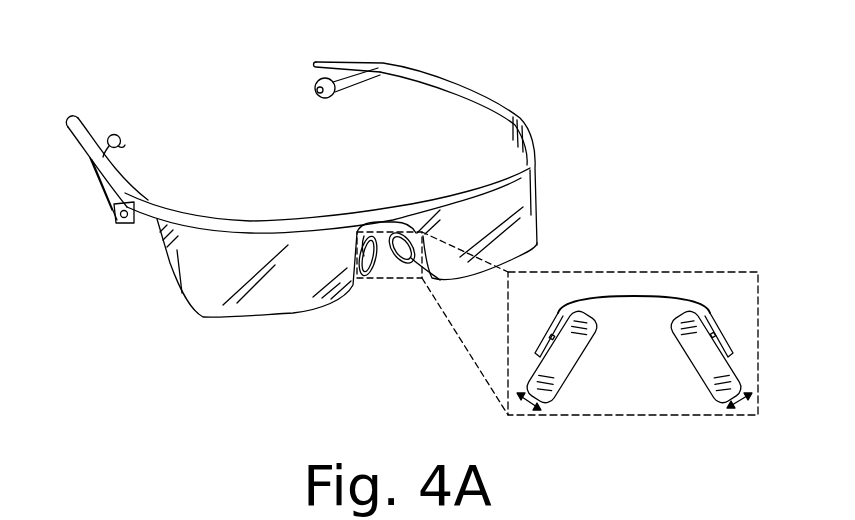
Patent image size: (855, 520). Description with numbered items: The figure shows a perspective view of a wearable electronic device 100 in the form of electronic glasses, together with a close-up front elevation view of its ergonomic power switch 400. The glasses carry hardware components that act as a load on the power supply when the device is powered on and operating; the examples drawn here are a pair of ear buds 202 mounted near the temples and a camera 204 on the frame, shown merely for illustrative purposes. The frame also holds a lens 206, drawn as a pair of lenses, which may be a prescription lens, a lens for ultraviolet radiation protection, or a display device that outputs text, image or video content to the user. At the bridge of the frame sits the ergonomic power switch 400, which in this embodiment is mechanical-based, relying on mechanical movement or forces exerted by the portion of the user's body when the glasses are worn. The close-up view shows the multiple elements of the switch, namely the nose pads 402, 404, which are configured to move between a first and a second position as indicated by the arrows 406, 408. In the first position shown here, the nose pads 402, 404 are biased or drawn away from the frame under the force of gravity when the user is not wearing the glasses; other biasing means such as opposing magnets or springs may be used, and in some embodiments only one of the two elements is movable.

The wearable electronic device 100 is at (527, 92).
The ear buds 202 is at (317, 87).
The camera 204 is at (124, 222).
The lens 206 is at (243, 247).
The ergonomic power switch 400 is at (358, 240).
The nose pad 402 is at (538, 377).
The nose pad 404 is at (733, 367).
The arrow 406 is at (523, 413).
The arrow 408 is at (740, 413).